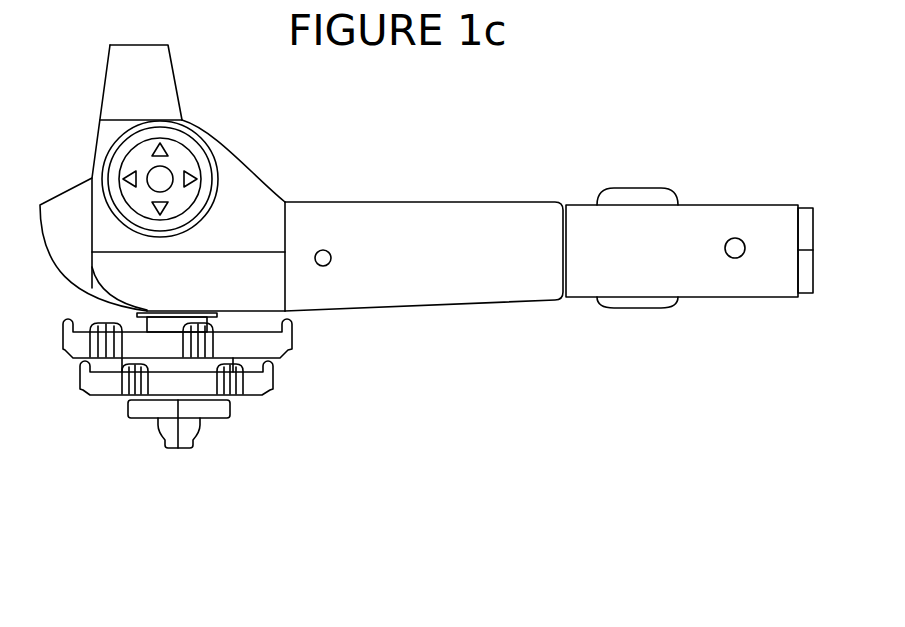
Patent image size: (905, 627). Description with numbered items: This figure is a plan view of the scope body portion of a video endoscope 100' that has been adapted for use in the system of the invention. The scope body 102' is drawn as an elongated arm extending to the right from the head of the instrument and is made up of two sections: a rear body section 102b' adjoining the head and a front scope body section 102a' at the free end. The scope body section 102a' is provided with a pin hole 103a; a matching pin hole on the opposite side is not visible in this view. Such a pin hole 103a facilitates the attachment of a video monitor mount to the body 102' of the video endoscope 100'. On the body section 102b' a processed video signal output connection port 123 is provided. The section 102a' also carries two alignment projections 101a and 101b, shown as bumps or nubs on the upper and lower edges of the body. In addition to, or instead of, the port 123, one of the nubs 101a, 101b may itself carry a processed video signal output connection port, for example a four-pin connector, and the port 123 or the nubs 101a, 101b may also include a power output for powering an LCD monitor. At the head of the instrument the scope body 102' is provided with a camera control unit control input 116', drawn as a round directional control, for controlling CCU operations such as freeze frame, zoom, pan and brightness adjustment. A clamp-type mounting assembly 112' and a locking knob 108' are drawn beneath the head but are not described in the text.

The video endoscope 100' is at (430, 259).
The camera control unit control input 116' is at (203, 177).
The scope body 102' is at (552, 236).
The body section 102b' is at (424, 228).
The scope body section 102a' is at (693, 259).
The alignment projection 101a is at (640, 198).
The alignment projection 101b is at (635, 303).
The processed video signal output connection port 123 is at (331, 258).
The pin hole 103a is at (740, 257).
The mount clamp assembly 112' is at (226, 354).
The locking knob 108' is at (221, 433).